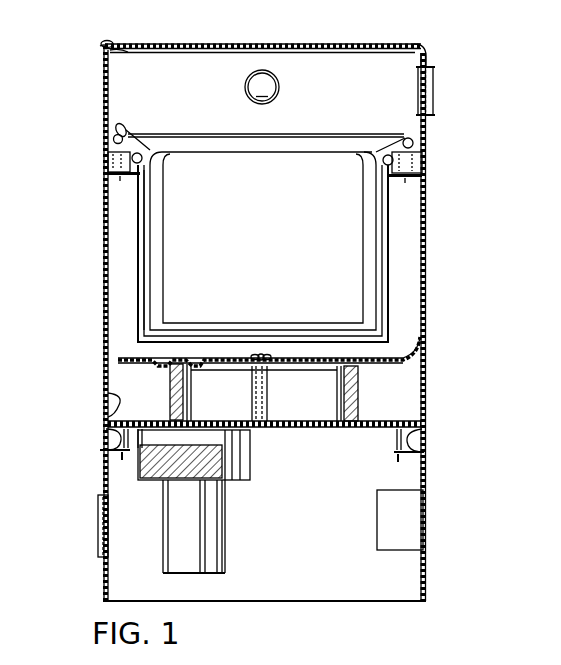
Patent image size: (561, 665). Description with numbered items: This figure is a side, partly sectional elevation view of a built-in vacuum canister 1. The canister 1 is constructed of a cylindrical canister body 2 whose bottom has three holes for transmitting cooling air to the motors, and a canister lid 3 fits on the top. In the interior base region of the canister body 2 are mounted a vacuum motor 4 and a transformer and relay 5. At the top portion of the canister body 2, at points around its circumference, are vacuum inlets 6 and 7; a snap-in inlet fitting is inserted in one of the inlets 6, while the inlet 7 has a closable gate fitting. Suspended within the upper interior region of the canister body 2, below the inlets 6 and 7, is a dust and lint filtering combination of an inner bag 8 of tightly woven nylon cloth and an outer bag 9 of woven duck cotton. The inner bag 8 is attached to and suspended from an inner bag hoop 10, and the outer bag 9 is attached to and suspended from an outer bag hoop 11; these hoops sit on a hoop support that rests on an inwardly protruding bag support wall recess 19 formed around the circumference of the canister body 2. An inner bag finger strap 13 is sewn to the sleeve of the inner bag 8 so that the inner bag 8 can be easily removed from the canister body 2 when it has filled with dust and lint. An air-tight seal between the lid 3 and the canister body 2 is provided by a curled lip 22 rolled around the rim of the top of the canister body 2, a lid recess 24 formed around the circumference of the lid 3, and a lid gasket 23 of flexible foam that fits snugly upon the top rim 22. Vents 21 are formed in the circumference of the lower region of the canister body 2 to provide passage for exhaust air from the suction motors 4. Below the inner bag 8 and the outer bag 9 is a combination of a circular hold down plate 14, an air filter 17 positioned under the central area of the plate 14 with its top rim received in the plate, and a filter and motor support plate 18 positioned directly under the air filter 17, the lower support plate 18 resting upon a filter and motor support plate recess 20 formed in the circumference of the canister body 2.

The built-in vacuum canister 1 is at (90, 248).
The canister body 2 is at (426, 250).
The canister lid 3 is at (289, 44).
The vacuum motor 4 is at (212, 521).
The transformer and relay 5 is at (405, 520).
The vacuum inlet 6 is at (262, 87).
The vacuum inlet 7 is at (434, 95).
The inner bag 8 is at (263, 247).
The outer bag 9 is at (138, 206).
The inner bag hoop 10 is at (126, 135).
The outer bag hoop 11 is at (142, 153).
The inner bag finger strap 13 is at (120, 124).
The hold down plate 14 is at (422, 337).
The air filter 17 is at (360, 395).
The filter and motor support plate 18 is at (108, 393).
The bag support wall recess 19 is at (106, 160).
The filter and motor support plate recess 20 is at (106, 440).
The vents 21 is at (98, 520).
The curled lip 22 is at (112, 50).
The lid gasket 23 is at (104, 50).
The lid recess 24 is at (107, 43).